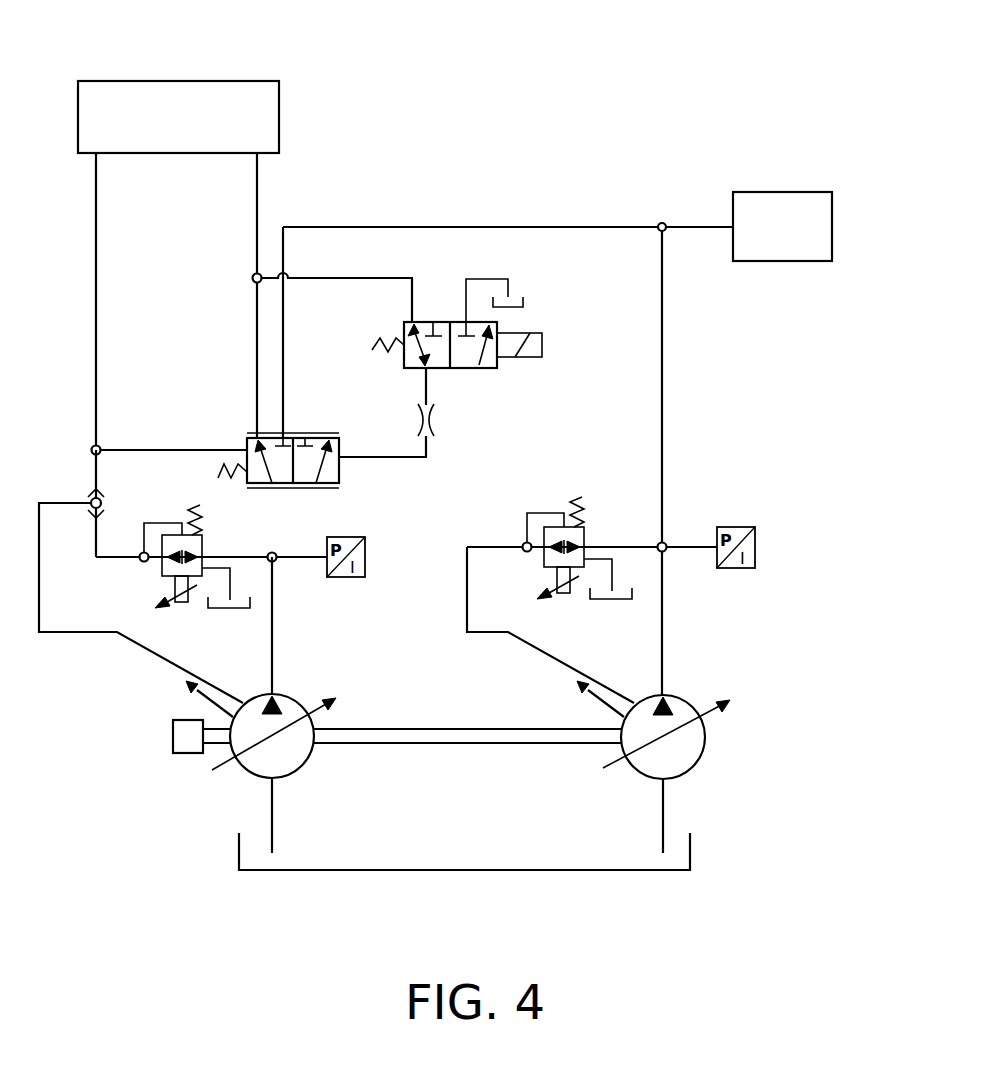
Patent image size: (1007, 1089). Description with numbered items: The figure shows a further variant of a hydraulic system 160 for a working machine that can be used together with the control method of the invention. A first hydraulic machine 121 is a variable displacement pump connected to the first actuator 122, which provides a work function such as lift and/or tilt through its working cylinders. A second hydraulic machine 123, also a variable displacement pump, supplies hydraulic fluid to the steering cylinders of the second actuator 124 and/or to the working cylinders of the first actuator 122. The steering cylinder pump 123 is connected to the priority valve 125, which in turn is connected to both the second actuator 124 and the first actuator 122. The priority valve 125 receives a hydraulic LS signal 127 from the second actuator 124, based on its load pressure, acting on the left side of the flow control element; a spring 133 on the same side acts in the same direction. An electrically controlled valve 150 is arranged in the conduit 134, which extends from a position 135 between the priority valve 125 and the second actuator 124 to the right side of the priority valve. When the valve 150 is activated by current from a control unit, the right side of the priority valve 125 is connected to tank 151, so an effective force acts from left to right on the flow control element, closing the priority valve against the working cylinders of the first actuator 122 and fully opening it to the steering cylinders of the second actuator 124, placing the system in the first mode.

The first hydraulic machine 121 is at (707, 744).
The first actuator 122 is at (766, 207).
The second hydraulic machine 123 is at (314, 760).
The second actuator 124 is at (213, 97).
The priority valve 125 is at (342, 470).
The hydraulic LS signal 127 is at (170, 450).
The spring 133 is at (220, 471).
The conduit 134 is at (325, 278).
The position 135 is at (255, 275).
The electrically controlled valve 150 is at (503, 358).
The tank 151 is at (523, 303).
The hydraulic system 160 is at (622, 89).